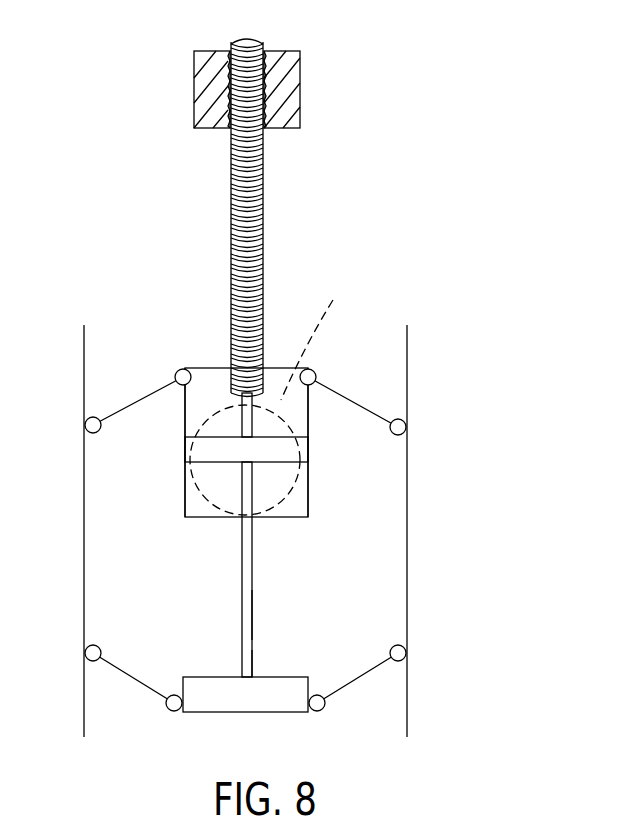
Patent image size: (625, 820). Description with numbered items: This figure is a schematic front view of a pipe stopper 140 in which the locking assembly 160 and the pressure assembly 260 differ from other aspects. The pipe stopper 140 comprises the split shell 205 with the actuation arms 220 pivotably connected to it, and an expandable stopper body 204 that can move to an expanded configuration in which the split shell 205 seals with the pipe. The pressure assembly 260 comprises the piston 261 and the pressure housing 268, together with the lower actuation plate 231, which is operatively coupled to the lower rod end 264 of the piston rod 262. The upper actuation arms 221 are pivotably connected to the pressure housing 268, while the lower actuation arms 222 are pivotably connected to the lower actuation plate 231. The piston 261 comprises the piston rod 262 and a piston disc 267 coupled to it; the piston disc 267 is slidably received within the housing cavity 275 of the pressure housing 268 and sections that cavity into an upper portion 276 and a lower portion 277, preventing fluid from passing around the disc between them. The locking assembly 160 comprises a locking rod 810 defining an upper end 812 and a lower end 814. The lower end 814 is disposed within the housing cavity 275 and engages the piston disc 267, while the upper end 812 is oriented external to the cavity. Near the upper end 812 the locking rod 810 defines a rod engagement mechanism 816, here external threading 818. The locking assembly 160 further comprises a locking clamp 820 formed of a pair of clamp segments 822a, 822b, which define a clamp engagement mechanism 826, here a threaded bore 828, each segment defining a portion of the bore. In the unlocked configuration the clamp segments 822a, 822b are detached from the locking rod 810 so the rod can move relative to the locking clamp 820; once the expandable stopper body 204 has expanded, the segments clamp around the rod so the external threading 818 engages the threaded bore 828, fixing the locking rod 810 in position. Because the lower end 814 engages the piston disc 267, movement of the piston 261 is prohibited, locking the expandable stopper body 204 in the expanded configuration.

The pipe stopper 140 is at (420, 198).
The locking assembly 160 is at (302, 210).
The locking rod 810 is at (242, 220).
The upper end 812 is at (253, 55).
The rod engagement mechanism 816 is at (293, 218).
The external threading 818 is at (247, 162).
The locking clamp 820 is at (195, 63).
The clamp segment 822a is at (210, 88).
The clamp segment 822b is at (287, 77).
The clamp engagement mechanism 826 is at (302, 89).
The threaded bore 828 is at (267, 110).
The expandable stopper body 204 is at (377, 330).
The split shell 205 is at (407, 503).
The pressure assembly 260 is at (378, 472).
The pressure housing 268 is at (185, 473).
The lower portion 277 is at (185, 503).
The housing cavity 275 is at (310, 503).
The piston disc 267 is at (295, 448).
The lower end 814 is at (242, 420).
The piston rod 262 is at (242, 602).
The piston 261 is at (252, 620).
The lower rod end 264 is at (252, 672).
The lower actuation plate 231 is at (273, 697).
The actuation arms 220 is at (293, 535).
The upper actuation arms 221 is at (357, 402).
The lower actuation arms 222 is at (368, 672).
The upper portion 276 is at (197, 405).